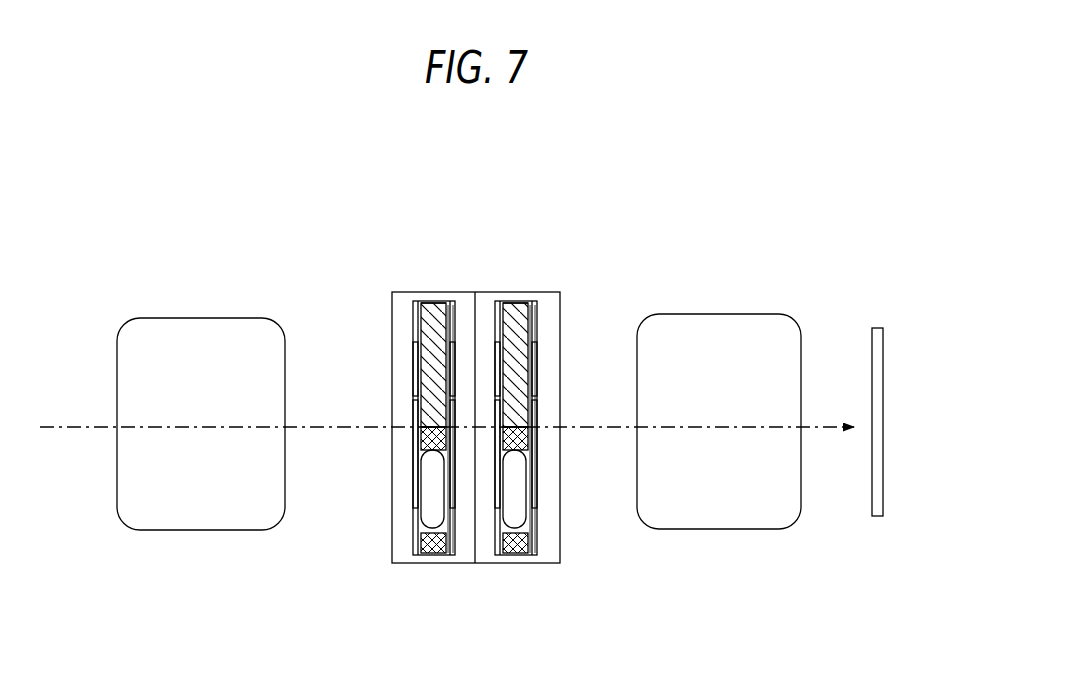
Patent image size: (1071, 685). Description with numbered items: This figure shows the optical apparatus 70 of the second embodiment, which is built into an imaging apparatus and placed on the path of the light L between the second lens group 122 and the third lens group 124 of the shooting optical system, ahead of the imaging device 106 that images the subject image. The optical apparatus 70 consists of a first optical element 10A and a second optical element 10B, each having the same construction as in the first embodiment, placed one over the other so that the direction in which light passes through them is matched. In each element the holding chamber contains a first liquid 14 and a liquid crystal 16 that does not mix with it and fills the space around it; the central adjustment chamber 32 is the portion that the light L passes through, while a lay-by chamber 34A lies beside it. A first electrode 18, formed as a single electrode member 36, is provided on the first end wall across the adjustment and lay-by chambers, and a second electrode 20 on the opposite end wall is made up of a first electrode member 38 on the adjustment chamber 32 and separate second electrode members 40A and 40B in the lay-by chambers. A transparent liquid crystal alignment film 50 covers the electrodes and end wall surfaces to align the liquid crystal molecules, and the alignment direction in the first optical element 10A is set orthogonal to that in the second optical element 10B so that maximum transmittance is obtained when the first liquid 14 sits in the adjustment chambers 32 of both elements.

The optical apparatus 70 is at (788, 228).
The first optical element 10A is at (474, 437).
The second optical element 10B is at (537, 290).
The first liquid 14 is at (424, 513).
The liquid crystal 16 is at (425, 327).
The first electrode 18 is at (412, 376).
The electrode member 36 is at (488, 376).
The second electrode 20 is at (466, 410).
The adjustment chamber 32 is at (437, 445).
The lay-by chamber 34A is at (427, 483).
The first electrode member 38 is at (480, 455).
The second electrode member 40A is at (455, 497).
The second electrode member 40B is at (456, 378).
The liquid crystal alignment film 50 is at (437, 548).
The imaging device 106 is at (880, 337).
The second lens group 122 is at (175, 518).
The third lens group 124 is at (717, 516).
The light L is at (63, 425).